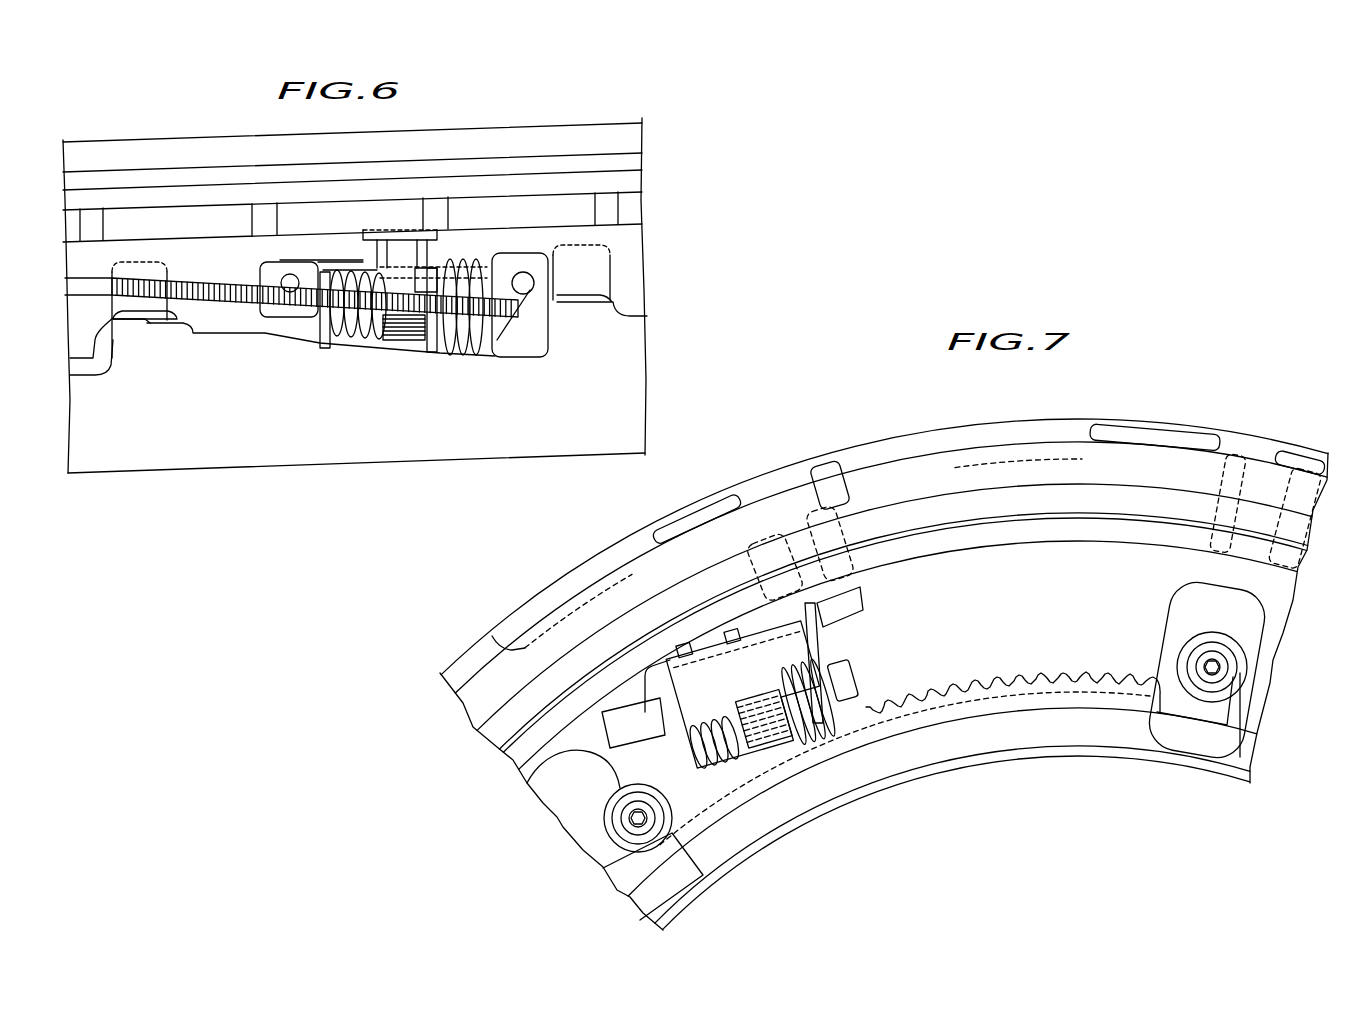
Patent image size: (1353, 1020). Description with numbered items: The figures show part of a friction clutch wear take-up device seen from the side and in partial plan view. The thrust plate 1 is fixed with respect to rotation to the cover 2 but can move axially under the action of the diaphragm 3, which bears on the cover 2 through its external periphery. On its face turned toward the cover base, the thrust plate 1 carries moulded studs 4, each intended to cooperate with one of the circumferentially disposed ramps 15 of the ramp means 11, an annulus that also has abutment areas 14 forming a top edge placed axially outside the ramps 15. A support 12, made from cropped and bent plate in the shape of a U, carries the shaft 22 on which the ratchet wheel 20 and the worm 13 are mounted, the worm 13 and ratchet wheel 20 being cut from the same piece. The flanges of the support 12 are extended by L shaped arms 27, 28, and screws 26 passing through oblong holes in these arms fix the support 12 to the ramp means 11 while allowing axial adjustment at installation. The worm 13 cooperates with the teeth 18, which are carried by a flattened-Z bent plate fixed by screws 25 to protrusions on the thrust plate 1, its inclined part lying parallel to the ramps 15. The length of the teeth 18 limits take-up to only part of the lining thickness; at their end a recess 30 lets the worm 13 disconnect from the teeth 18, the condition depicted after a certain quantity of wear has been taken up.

In FIG. 6, the thrust plate 1 is at (168, 478).
In FIG. 7, the thrust plate 1 is at (557, 817).
In FIG. 6, the cover 2 is at (648, 146).
In FIG. 6, the diaphragm 3 is at (642, 208).
In FIG. 6, the studs 4 is at (157, 337).
In FIG. 6, the ramp means 11 is at (203, 238).
In FIG. 7, the ramp means 11 is at (1013, 555).
In FIG. 6, the support 12 is at (344, 262).
In FIG. 7, the support 12 is at (715, 773).
In FIG. 6, the worm 13 is at (478, 348).
In FIG. 7, the worm 13 is at (830, 730).
In FIG. 7, the abutment areas 14 is at (1102, 518).
In FIG. 6, the ramps 15 is at (208, 330).
In FIG. 6, the teeth 18 is at (228, 312).
In FIG. 7, the teeth 18 is at (1012, 672).
In FIG. 6, the ratchet wheel 20 is at (401, 345).
In FIG. 6, the shaft 22 is at (500, 337).
In FIG. 7, the shaft 22 is at (850, 683).
In FIG. 7, the screws 25 is at (630, 825).
In FIG. 6, the screws 26 is at (287, 292).
In FIG. 7, the screws 26 is at (860, 605).
In FIG. 7, the L shaped arm 27 is at (622, 703).
In FIG. 7, the L shaped arm 28 is at (845, 580).
In FIG. 7, the recess 30 is at (813, 748).